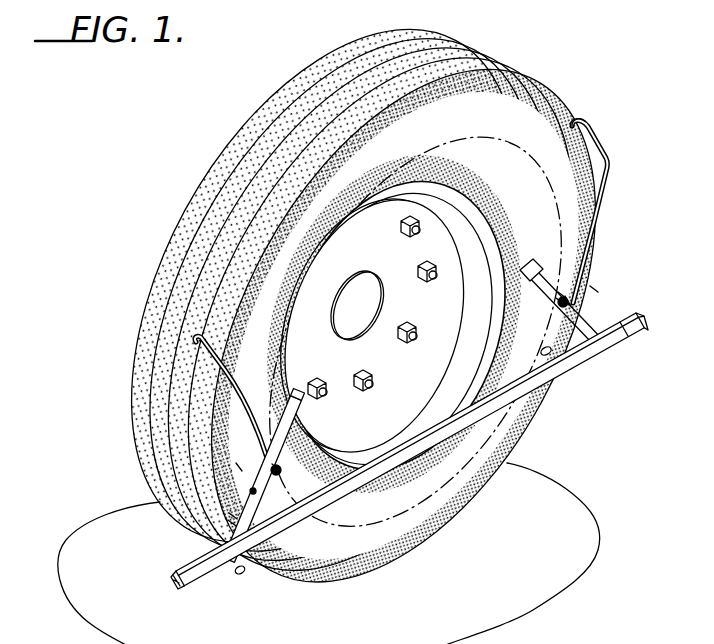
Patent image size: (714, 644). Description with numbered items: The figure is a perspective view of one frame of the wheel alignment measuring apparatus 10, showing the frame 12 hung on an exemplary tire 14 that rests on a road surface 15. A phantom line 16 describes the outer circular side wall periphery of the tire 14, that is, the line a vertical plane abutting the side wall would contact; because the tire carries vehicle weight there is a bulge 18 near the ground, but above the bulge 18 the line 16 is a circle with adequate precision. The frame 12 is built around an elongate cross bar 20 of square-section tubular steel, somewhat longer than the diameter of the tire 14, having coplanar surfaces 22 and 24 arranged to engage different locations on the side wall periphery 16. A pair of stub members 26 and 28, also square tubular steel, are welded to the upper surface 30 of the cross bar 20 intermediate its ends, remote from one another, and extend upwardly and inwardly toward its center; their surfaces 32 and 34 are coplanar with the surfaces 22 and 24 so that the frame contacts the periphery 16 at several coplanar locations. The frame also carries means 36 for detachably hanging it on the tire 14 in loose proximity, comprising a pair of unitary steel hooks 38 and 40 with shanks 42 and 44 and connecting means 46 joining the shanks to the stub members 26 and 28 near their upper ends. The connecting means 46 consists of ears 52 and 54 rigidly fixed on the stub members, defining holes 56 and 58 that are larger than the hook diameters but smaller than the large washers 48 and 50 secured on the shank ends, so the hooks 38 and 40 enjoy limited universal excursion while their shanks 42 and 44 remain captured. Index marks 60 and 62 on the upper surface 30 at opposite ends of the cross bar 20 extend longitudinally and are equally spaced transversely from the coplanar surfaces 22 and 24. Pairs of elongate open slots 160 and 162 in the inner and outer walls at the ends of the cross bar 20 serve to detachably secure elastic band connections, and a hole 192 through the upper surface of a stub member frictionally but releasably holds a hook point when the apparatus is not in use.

The wheel alignment measuring apparatus 10 is at (405, 368).
The frame 12 is at (250, 573).
The tire 14 is at (363, 322).
The road surface 15 is at (553, 582).
The line describing outer circular side wall periphery 16 is at (449, 130).
The bulge 18 is at (425, 522).
The cross bar 20 is at (303, 573).
The coplanar surface 22 is at (288, 466).
The coplanar surface 24 is at (550, 353).
The stub member 26 is at (230, 523).
The stub member 28 is at (592, 340).
The upper surface of cross bar 30 is at (430, 420).
The surface of stub member 32 is at (282, 390).
The surface of stub member 34 is at (522, 278).
The means for detachably hanging the frame 36 is at (238, 467).
The hook 38 is at (193, 343).
The hook 40 is at (596, 134).
The shank 42 is at (262, 420).
The shank 44 is at (598, 213).
The means connecting the shanks to the stub members 46 is at (304, 410).
The washer 48 is at (288, 468).
The washer 50 is at (567, 302).
The ear 52 is at (255, 488).
The ear 54 is at (560, 294).
The hole 56 is at (275, 466).
The hole 58 is at (560, 300).
The index mark 60 is at (247, 567).
The index mark 62 is at (625, 332).
The pair of elongate open slots 160 is at (172, 578).
The pair of elongate open slots 162 is at (640, 320).
The hole 192 is at (232, 516).